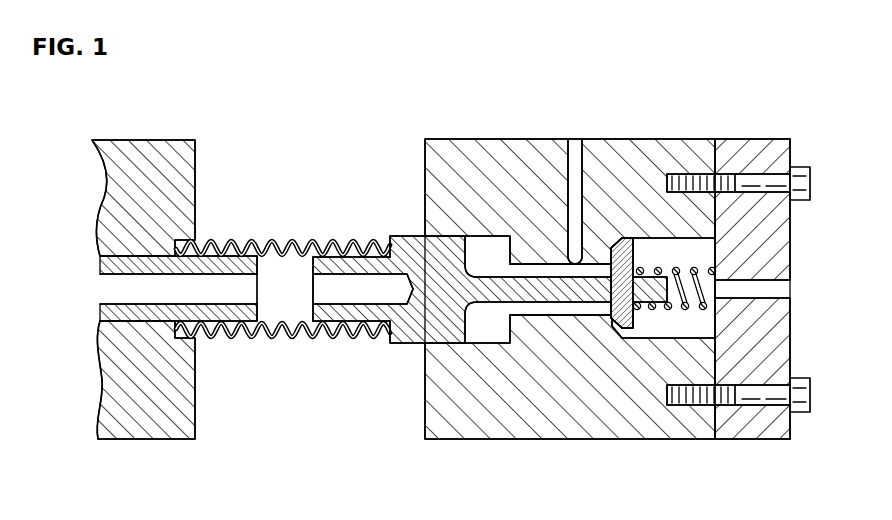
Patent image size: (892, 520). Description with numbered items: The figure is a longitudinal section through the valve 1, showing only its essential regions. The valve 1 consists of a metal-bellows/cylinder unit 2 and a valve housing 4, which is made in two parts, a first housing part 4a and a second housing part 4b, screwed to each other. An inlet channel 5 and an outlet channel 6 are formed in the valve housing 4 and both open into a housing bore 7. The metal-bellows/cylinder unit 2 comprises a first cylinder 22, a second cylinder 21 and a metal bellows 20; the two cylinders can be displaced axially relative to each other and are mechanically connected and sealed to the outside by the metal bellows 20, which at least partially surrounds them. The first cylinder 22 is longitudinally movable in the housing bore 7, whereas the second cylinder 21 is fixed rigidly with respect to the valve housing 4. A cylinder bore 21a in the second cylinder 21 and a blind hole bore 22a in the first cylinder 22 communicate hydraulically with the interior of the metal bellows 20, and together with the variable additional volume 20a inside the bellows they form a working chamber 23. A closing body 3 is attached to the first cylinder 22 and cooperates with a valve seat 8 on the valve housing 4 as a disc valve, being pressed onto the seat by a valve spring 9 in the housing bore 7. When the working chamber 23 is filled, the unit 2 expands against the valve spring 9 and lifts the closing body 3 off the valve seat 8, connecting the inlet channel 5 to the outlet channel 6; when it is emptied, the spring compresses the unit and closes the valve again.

The valve 1 is at (284, 73).
The metal-bellows/cylinder unit 2 is at (300, 355).
The closing body 3 is at (631, 263).
The valve housing 4 is at (468, 195).
The first housing part 4a is at (512, 188).
The second housing part 4b is at (748, 239).
The inlet channel 5 is at (772, 290).
The outlet channel 6 is at (575, 158).
The housing bore 7 is at (684, 333).
The valve seat 8 is at (634, 242).
The valve spring 9 is at (690, 308).
The metal bellows 20 is at (263, 246).
The additional volume 20a is at (294, 256).
The second cylinder 21 is at (135, 208).
The cylinder bore 21a is at (133, 291).
The first cylinder 22 is at (421, 244).
The blind hole bore 22a is at (347, 294).
The working chamber 23 is at (276, 305).